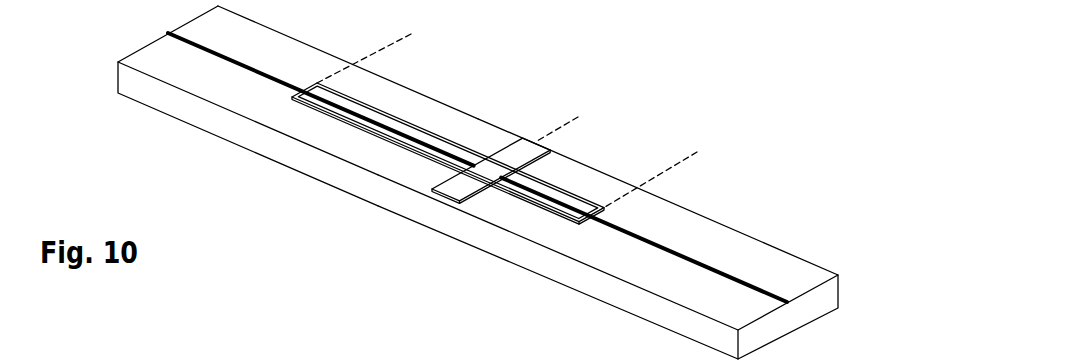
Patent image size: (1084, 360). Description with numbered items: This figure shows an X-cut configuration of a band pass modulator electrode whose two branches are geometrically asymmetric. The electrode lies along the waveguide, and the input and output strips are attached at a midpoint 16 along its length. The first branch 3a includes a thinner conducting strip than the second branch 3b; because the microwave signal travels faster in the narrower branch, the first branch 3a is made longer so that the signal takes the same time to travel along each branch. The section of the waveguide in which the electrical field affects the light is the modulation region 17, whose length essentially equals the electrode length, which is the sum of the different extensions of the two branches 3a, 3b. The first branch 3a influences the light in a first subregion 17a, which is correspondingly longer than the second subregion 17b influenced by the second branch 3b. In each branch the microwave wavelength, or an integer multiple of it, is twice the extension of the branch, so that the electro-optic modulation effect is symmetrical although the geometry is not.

The first branch 3a is at (365, 153).
The second branch 3b is at (522, 215).
The midpoint 16 is at (488, 166).
The modulation region 17 is at (411, 37).
The first subregion 17a is at (578, 117).
The second subregion 17b is at (688, 160).